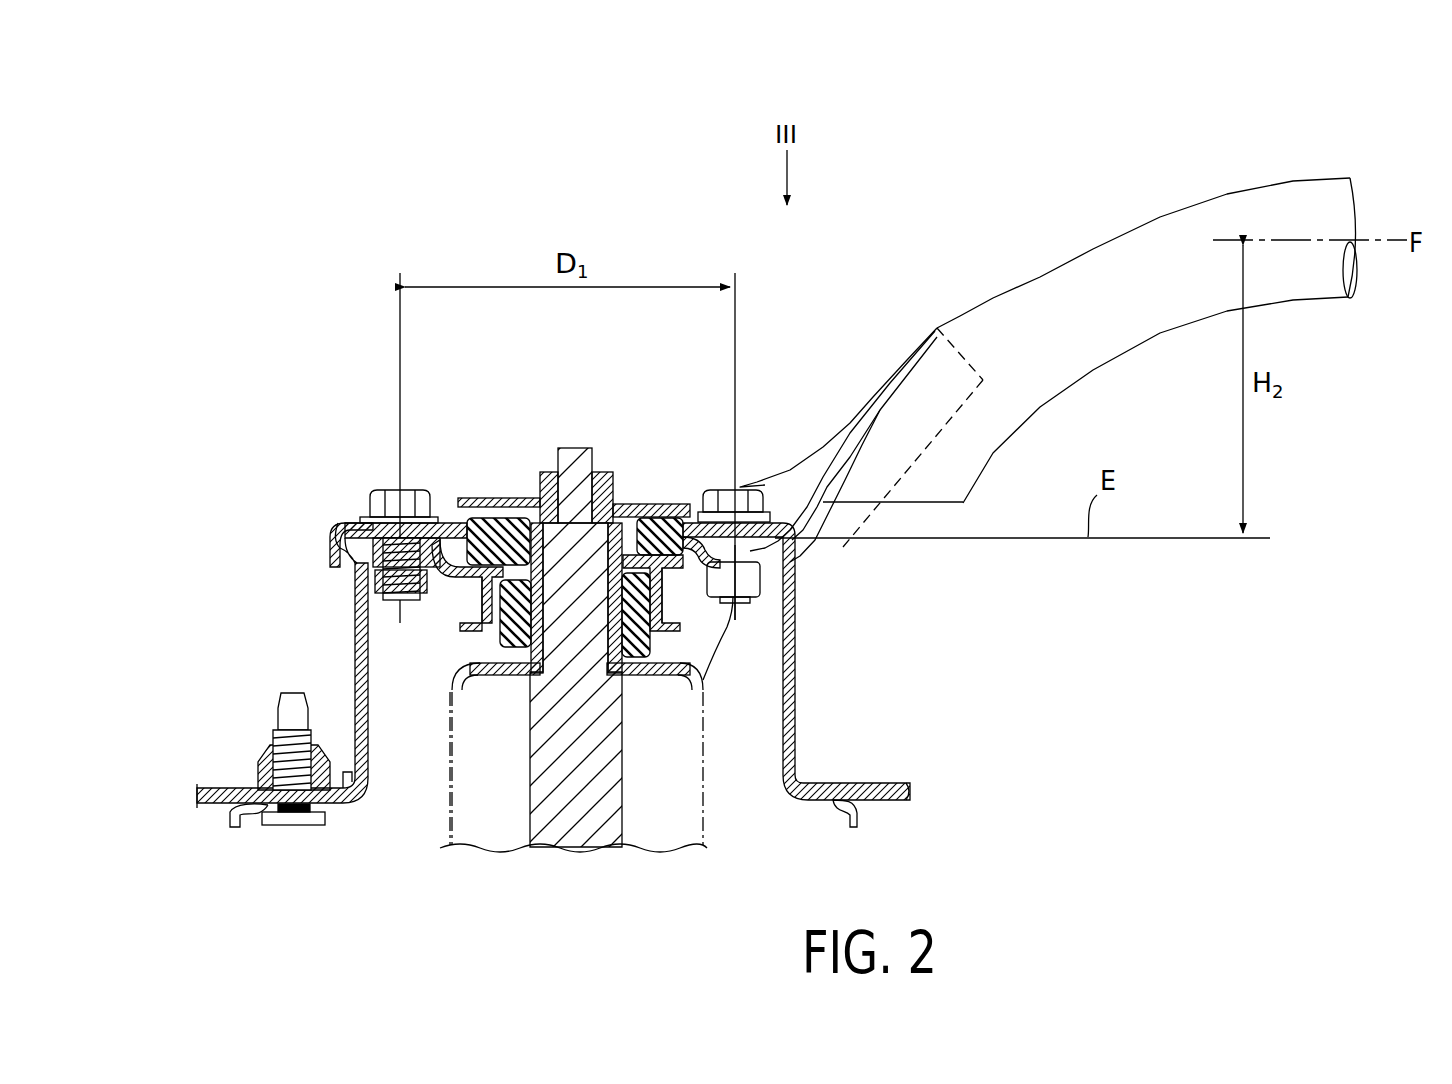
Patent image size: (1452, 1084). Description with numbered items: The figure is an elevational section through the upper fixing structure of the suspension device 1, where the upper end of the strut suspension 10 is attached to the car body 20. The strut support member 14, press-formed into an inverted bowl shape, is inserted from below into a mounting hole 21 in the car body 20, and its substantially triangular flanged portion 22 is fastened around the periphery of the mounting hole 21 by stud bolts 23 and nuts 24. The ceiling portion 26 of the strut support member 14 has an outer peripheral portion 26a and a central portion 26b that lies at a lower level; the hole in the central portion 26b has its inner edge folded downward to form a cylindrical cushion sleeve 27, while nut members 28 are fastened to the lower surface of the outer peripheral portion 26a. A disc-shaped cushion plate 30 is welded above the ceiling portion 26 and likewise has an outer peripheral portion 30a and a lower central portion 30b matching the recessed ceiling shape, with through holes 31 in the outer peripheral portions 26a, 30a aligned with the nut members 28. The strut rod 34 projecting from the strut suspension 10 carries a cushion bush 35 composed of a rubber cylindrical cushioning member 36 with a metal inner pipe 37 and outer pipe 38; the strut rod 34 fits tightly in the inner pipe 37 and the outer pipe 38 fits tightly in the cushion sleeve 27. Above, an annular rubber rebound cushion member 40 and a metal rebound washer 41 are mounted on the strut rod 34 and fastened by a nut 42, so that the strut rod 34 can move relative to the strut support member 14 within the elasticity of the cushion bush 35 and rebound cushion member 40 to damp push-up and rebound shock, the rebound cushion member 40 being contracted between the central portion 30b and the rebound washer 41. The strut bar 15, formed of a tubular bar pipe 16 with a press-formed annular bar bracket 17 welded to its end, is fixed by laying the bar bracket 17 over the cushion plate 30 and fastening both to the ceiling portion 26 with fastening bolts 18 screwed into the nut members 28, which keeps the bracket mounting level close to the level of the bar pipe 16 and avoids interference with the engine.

The suspension device 1 is at (278, 290).
The strut suspension 10 is at (445, 743).
The strut support member 14 is at (350, 640).
The strut bar 15 is at (1000, 217).
The bar pipe 16 is at (1037, 262).
The bar bracket 17 is at (825, 443).
The fastening bolt 18 is at (375, 490).
The car body 20 is at (213, 790).
The mounting hole 21 is at (365, 787).
The flanged portion 22 is at (232, 822).
The stud bolt 23 is at (277, 830).
The nut 24 is at (265, 745).
The ceiling portion 26 is at (513, 395).
The outer peripheral portion 26a is at (438, 505).
The central portion 26b is at (478, 498).
The cushion sleeve 27 is at (468, 600).
The nut member 28 is at (370, 582).
The cushion plate 30 is at (727, 387).
The outer peripheral portion 30a is at (706, 495).
The central portion 30b is at (636, 495).
The through hole 31 is at (347, 527).
The strut rod 34 is at (575, 447).
The cushion bush 35 is at (740, 767).
The cylindrical cushioning member 36 is at (672, 650).
The inner pipe 37 is at (626, 650).
The outer pipe 38 is at (714, 677).
The rebound cushion member 40 is at (714, 600).
The rebound washer 41 is at (613, 495).
The nut 42 is at (538, 470).